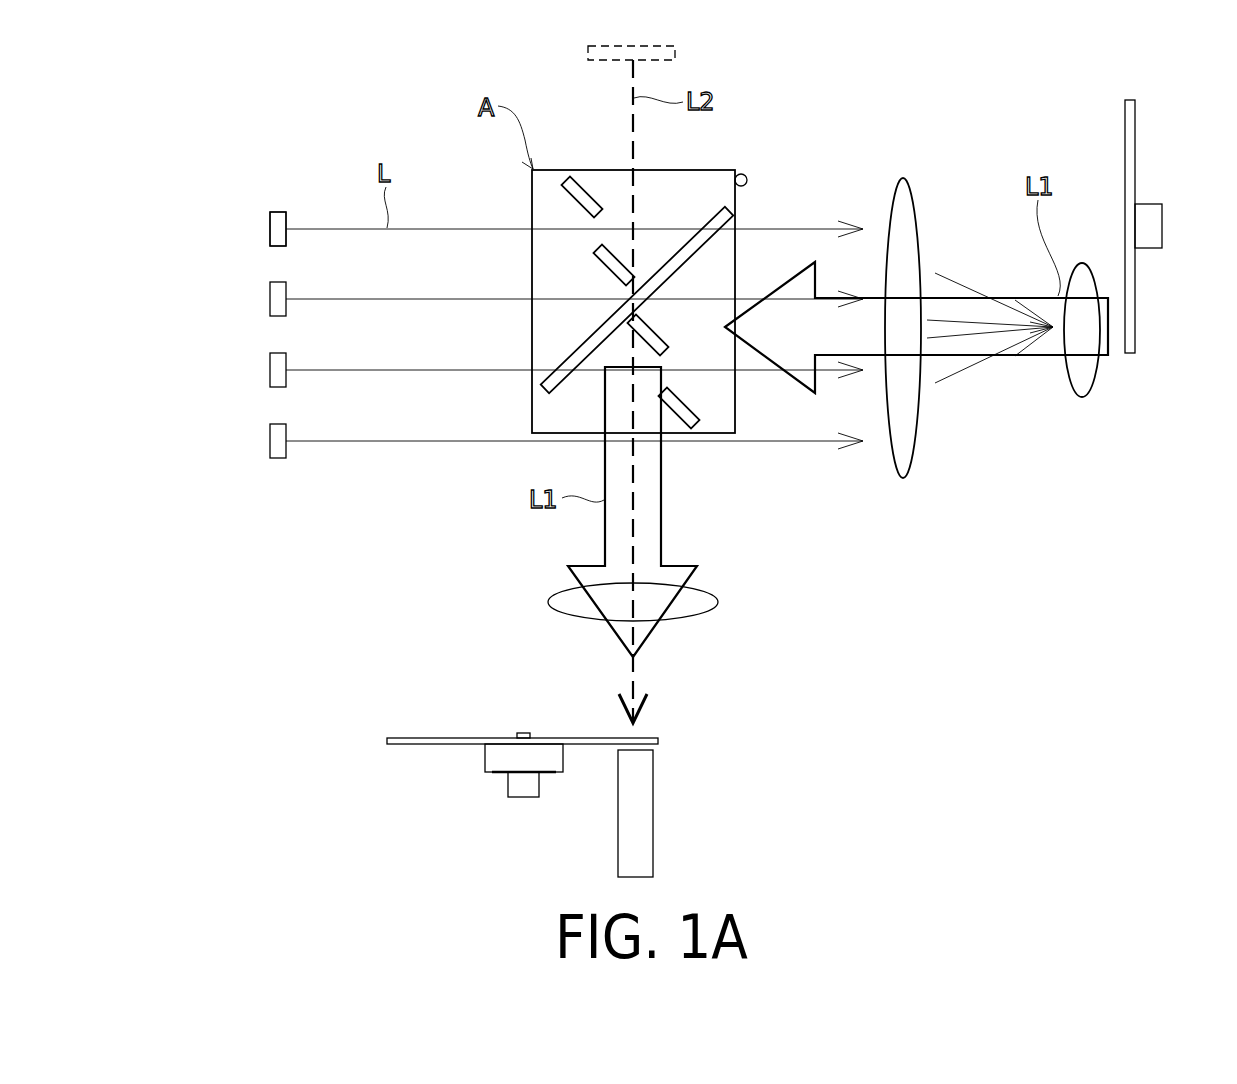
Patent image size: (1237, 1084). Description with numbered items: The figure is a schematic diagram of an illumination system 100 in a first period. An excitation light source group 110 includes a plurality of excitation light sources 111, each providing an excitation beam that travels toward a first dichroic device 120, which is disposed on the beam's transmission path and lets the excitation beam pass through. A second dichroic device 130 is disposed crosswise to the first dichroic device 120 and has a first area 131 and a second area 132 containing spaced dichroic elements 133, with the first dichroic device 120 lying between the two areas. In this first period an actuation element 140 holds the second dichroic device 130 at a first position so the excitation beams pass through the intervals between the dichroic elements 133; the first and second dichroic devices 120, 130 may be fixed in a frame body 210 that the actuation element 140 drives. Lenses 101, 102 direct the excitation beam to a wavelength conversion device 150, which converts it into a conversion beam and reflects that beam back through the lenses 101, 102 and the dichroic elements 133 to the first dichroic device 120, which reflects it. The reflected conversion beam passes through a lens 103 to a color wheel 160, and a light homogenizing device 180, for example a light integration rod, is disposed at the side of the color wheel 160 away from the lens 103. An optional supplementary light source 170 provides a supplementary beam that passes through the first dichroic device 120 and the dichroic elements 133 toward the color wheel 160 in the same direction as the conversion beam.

The illumination system 100 is at (225, 147).
The lens 101 is at (903, 205).
The lens 102 is at (1082, 375).
The lens 103 is at (700, 605).
The excitation light source group 110 is at (272, 478).
The excitation light source 111 is at (270, 230).
The first dichroic device 120 is at (733, 209).
The second dichroic device 130 is at (700, 432).
The first area 131 is at (624, 290).
The second area 132 is at (723, 397).
The dichroic element 133 is at (580, 178).
The actuation element 140 is at (748, 180).
The wavelength conversion device 150 is at (1133, 128).
The color wheel 160 is at (410, 745).
The supplementary light source 170 is at (676, 50).
The light homogenizing device 180 is at (641, 805).
The frame body 210 is at (703, 168).